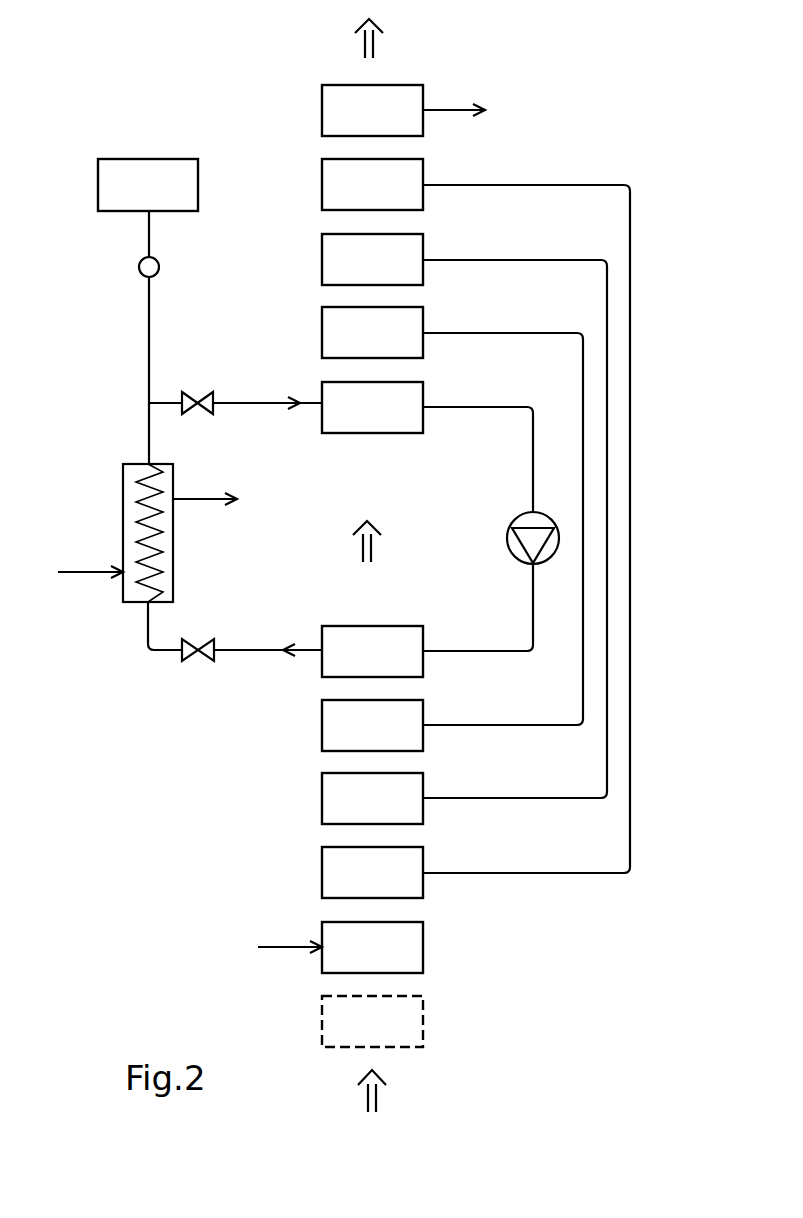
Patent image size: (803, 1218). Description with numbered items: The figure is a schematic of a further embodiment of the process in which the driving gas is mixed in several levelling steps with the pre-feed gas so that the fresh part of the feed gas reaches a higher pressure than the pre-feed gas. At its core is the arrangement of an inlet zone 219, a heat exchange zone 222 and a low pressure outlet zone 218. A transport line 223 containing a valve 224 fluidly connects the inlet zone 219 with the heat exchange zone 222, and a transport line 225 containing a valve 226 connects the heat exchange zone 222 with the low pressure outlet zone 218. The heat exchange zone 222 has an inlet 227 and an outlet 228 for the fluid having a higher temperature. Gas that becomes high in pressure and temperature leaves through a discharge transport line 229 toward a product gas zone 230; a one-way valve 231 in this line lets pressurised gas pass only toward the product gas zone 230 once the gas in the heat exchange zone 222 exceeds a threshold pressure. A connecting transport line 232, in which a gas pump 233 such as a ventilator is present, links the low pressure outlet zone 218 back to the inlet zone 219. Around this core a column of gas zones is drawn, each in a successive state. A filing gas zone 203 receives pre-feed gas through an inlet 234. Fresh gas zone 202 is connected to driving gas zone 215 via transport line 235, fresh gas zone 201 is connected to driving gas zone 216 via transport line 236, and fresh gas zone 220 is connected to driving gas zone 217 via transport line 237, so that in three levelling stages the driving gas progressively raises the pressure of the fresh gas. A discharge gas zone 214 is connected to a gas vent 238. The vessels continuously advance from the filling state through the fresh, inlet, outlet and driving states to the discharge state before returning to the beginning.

The fresh gas zone 201 is at (372, 798).
The fresh gas zone 202 is at (372, 872).
The filing gas zone 203 is at (372, 947).
The discharge gas zone 214 is at (372, 566).
The driving gas zone 215 is at (372, 184).
The driving gas zone 216 is at (372, 259).
The driving gas zone 217 is at (372, 332).
The low pressure outlet zone 218 is at (372, 407).
The inlet zone 219 is at (372, 651).
The fresh gas zone 220 is at (372, 725).
The heat exchange zone 222 is at (173, 545).
The transport line 223 is at (260, 650).
The valve 224 is at (187, 660).
The transport line 225 is at (258, 403).
The valve 226 is at (186, 393).
The inlet 227 is at (90, 561).
The outlet 228 is at (205, 487).
The discharge transport line 229 is at (145, 370).
The product gas zone 230 is at (148, 185).
The one-way valve 231 is at (139, 265).
The connecting transport line 232 is at (533, 482).
The gas pump 233 is at (512, 528).
The inlet 234 is at (290, 935).
The transport line 235 is at (627, 870).
The transport line 236 is at (600, 797).
The transport line 237 is at (577, 722).
The gas vent 238 is at (447, 108).